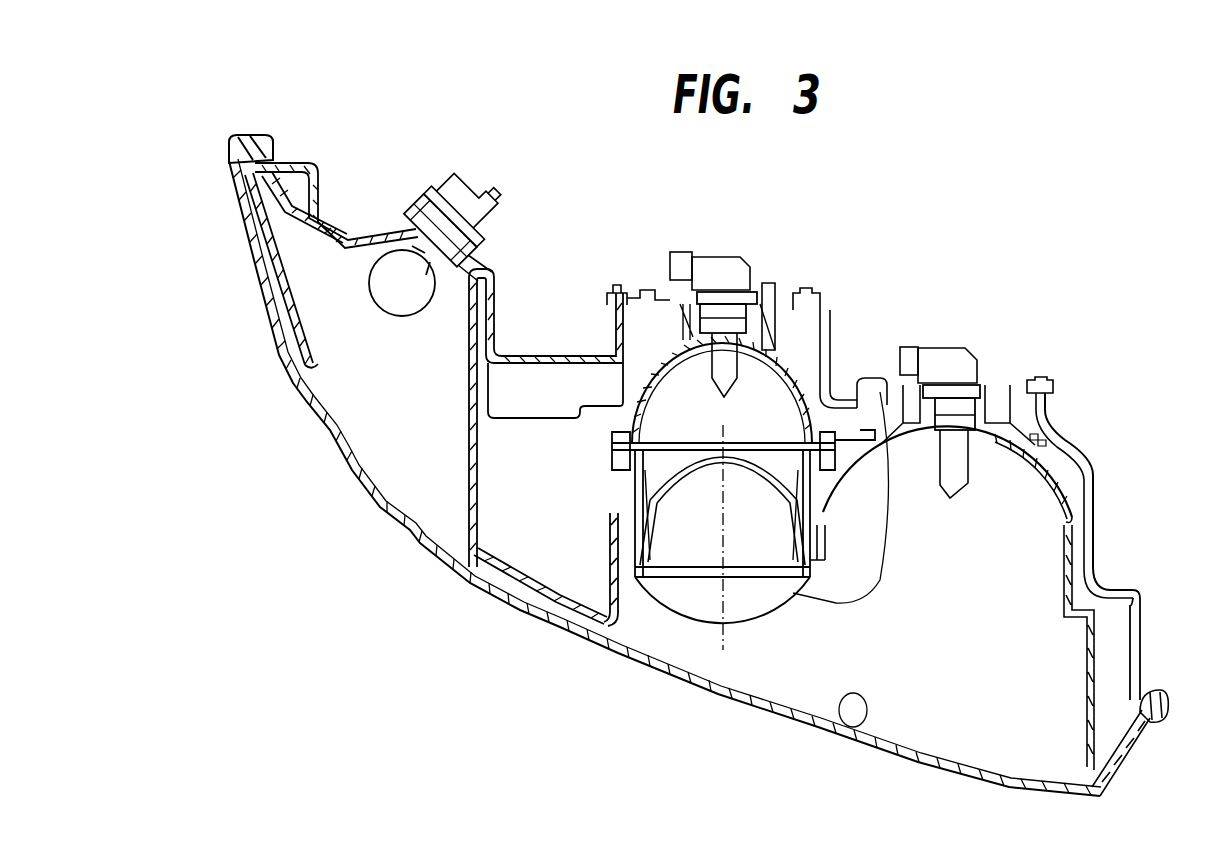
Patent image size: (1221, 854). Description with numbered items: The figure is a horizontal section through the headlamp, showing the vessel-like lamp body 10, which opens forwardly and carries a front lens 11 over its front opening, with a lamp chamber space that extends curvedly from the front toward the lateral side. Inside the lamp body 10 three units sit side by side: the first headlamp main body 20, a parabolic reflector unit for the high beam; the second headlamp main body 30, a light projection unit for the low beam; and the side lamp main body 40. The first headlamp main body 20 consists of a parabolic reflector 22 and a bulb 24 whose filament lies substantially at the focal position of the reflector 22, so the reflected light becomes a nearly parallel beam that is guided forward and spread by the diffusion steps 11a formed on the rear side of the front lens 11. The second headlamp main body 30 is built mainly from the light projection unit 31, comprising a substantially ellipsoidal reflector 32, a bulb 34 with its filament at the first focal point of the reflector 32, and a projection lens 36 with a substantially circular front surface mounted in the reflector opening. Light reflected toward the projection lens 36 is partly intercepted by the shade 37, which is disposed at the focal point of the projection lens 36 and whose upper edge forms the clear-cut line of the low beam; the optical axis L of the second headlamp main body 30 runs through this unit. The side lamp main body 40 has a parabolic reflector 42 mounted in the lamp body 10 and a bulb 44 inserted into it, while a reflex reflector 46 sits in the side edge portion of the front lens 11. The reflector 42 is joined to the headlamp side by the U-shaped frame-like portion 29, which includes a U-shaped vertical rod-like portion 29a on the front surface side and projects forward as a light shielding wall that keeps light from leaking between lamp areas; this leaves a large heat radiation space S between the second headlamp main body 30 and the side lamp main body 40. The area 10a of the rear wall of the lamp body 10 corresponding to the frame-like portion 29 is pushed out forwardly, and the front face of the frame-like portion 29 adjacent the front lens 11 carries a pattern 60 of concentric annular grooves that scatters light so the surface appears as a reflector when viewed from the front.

The lamp body 10 is at (1093, 470).
The area in the rear surface wall of the lamp body 10a is at (498, 425).
The front lens 11 is at (778, 714).
The diffusion steps 11a is at (843, 725).
The first headlamp main body 20 is at (947, 548).
The parabolic reflector 22 is at (1057, 447).
The bulb 24 is at (963, 487).
The frame-like portion 29 is at (461, 543).
The vertical rod-like portion 29a is at (531, 608).
The second headlamp main body 30 is at (736, 640).
The light projection unit 31 is at (935, 228).
The reflector 32 is at (787, 340).
The bulb 34 is at (745, 383).
The projection lens 36 is at (880, 392).
The shade 37 is at (678, 460).
The side lamp main body 40 is at (383, 315).
The reflector 42 is at (365, 235).
The bulb 44 is at (397, 255).
The reflex reflector 46 is at (278, 304).
The pattern 60 is at (582, 617).
The heat radiation space S is at (558, 510).
The optical axis L is at (720, 640).